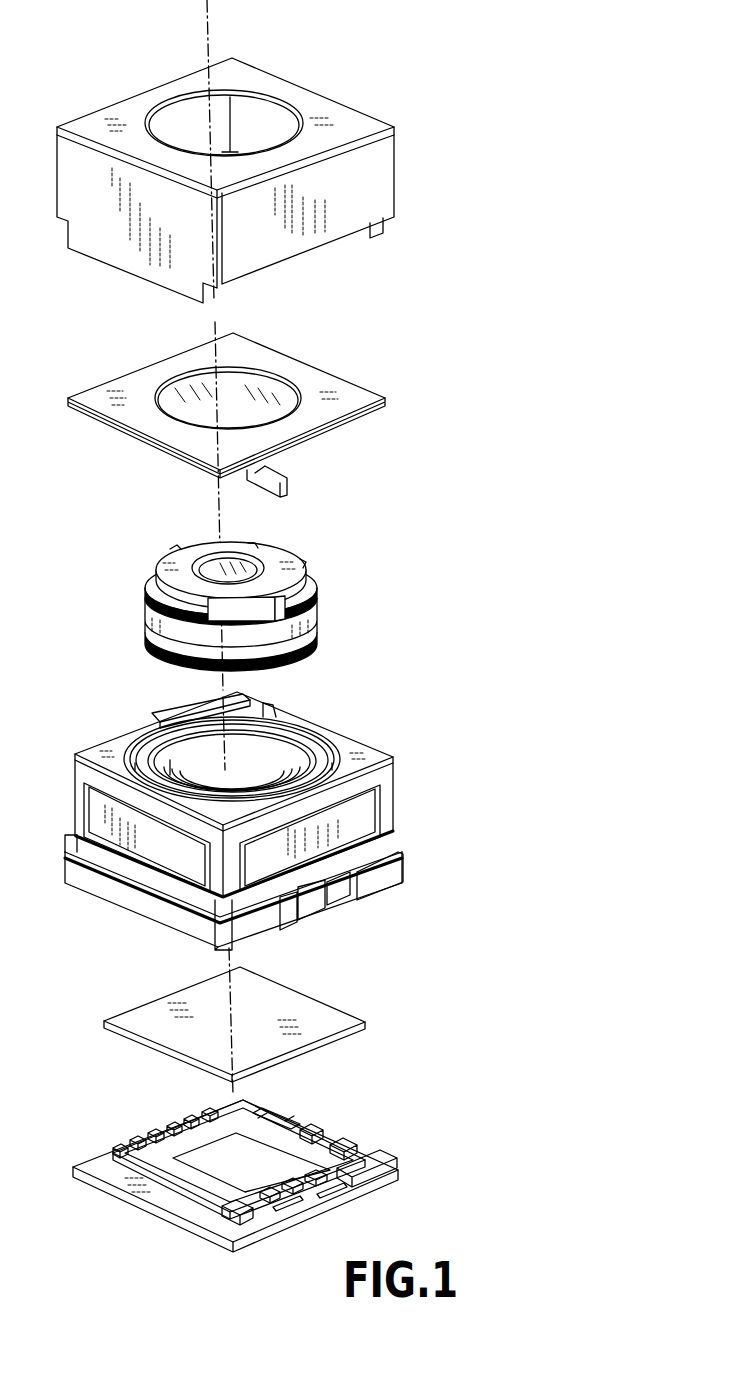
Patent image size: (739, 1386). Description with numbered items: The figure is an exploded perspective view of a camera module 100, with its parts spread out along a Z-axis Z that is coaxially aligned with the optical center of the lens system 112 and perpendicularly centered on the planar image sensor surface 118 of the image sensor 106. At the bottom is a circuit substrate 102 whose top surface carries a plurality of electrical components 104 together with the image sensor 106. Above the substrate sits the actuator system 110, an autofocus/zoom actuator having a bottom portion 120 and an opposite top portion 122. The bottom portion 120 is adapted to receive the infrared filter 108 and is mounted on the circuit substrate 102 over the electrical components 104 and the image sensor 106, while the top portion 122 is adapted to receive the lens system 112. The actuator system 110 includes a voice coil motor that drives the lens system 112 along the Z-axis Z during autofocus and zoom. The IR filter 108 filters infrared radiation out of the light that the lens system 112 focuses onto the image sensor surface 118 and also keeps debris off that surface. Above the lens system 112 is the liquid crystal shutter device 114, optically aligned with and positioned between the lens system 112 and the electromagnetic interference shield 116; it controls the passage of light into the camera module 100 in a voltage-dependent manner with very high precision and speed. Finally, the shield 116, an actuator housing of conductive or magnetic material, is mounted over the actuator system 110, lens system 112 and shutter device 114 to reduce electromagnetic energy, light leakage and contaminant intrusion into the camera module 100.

The camera module 100 is at (543, 517).
The circuit substrate 102 is at (288, 1234).
The electrical components 104 is at (329, 1126).
The image sensor 106 is at (172, 1169).
The infrared (IR) filter 108 is at (308, 987).
The actuator system 110 is at (408, 810).
The lens system 112 is at (315, 554).
The liquid crystal shutter device 114 is at (378, 381).
The electromagnetic interference shield 116 is at (396, 163).
The image sensor surface 118 is at (247, 1153).
The bottom portion 120 is at (129, 920).
The top portion 122 is at (154, 717).
The Z-axis Z is at (210, 30).